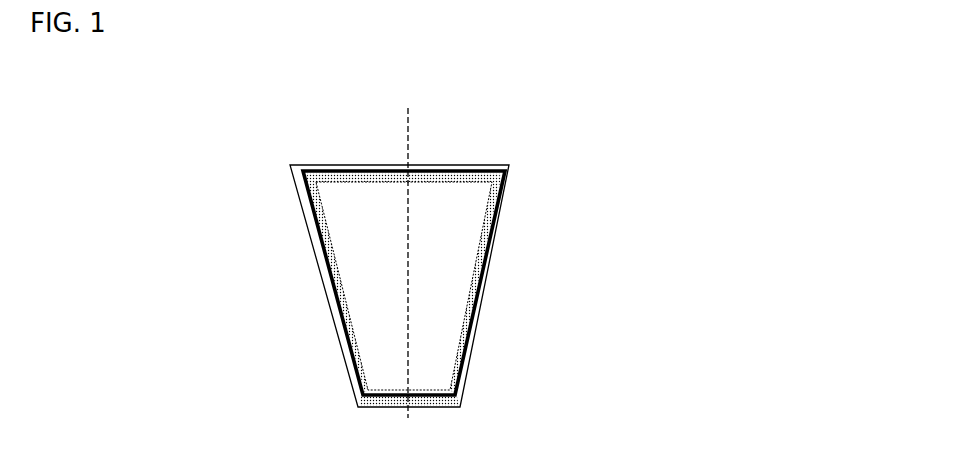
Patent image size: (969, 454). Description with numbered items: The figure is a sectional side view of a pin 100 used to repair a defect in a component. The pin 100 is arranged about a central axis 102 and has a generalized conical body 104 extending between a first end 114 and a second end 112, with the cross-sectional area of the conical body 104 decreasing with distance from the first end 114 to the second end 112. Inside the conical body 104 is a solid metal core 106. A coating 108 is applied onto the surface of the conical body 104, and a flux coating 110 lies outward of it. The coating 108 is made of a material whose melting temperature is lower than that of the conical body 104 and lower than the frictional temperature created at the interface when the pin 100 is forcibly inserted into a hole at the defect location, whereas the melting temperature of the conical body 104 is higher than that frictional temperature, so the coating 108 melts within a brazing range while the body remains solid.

The pin 100 is at (522, 125).
The central axis 102 is at (408, 142).
The conical body 104 is at (322, 208).
The solid metal core 106 is at (367, 308).
The coating 108 is at (492, 253).
The flux coating 110 is at (480, 320).
The second end 112 is at (357, 390).
The first end 114 is at (458, 180).